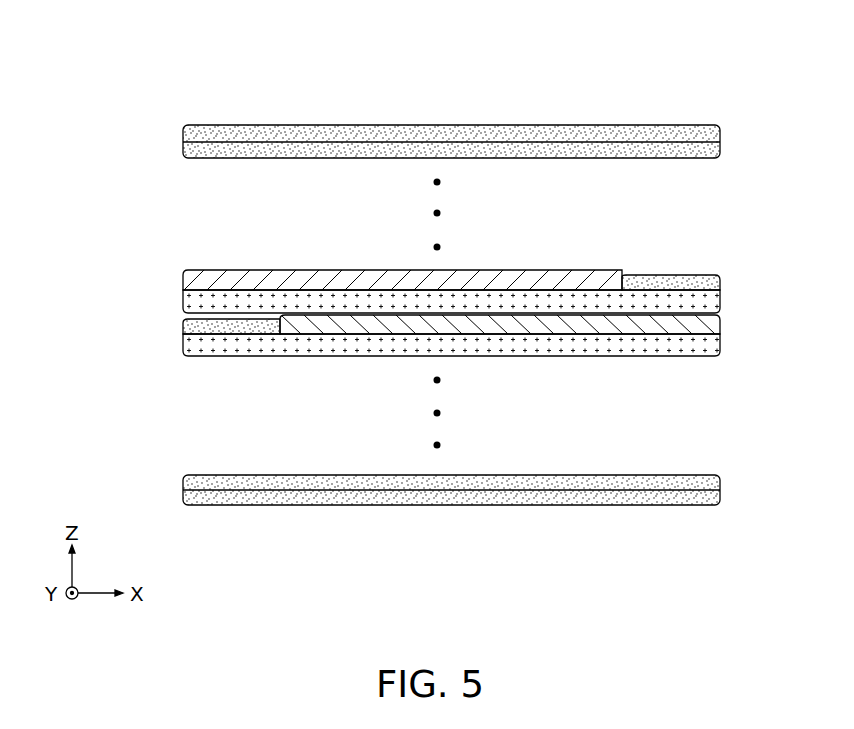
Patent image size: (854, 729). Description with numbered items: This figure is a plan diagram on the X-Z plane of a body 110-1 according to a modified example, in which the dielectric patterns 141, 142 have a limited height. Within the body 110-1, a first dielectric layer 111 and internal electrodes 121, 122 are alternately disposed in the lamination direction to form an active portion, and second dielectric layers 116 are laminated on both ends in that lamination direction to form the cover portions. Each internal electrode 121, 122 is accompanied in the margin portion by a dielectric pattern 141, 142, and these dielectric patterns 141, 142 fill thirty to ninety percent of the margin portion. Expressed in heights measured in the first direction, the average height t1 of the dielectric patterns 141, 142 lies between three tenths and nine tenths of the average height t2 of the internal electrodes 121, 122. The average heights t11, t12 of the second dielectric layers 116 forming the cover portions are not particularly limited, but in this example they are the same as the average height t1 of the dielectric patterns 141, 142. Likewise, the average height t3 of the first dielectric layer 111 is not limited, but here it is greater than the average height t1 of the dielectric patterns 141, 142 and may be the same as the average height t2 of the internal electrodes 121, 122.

The body 110-1 is at (325, 37).
The first dielectric layer 111 is at (183, 300).
The second dielectric layer 116 is at (183, 134).
The internal electrode 121 is at (225, 282).
The internal electrode 122 is at (722, 325).
The dielectric pattern 141 is at (690, 283).
The dielectric pattern 142 is at (237, 328).
The average height of the dielectric patterns t1 is at (151, 300).
The average height of the internal electrodes t2 is at (181, 334).
The average height of the first dielectric layer t3 is at (722, 290).
The average height of the second dielectric layer t11 is at (722, 142).
The average height of the second dielectric layer t12 is at (722, 475).